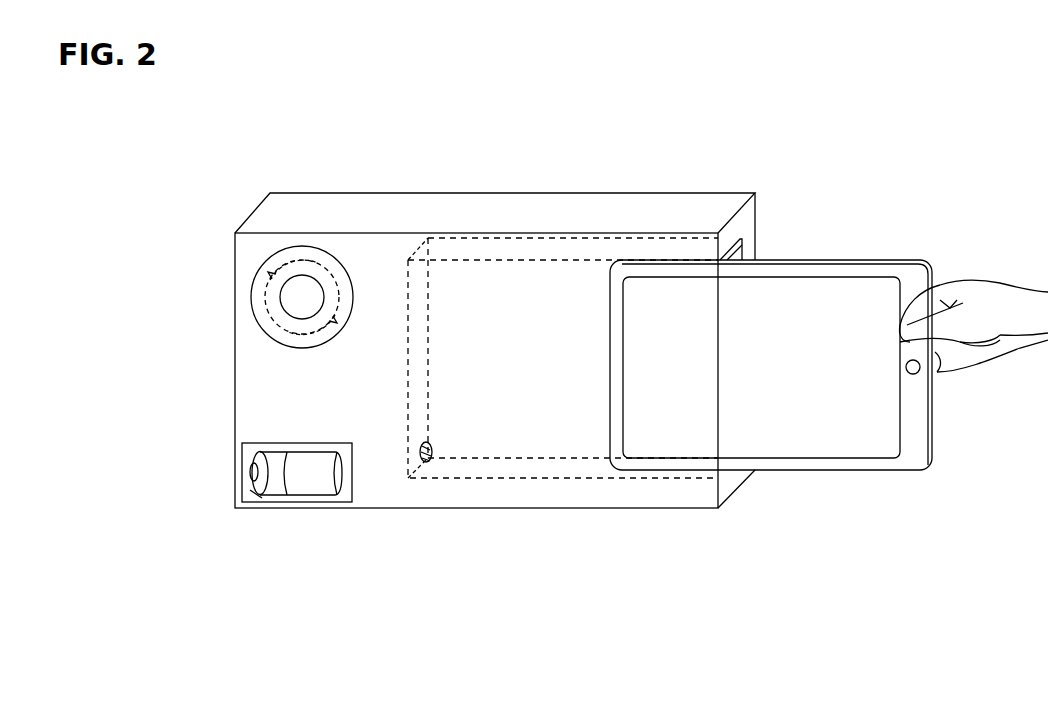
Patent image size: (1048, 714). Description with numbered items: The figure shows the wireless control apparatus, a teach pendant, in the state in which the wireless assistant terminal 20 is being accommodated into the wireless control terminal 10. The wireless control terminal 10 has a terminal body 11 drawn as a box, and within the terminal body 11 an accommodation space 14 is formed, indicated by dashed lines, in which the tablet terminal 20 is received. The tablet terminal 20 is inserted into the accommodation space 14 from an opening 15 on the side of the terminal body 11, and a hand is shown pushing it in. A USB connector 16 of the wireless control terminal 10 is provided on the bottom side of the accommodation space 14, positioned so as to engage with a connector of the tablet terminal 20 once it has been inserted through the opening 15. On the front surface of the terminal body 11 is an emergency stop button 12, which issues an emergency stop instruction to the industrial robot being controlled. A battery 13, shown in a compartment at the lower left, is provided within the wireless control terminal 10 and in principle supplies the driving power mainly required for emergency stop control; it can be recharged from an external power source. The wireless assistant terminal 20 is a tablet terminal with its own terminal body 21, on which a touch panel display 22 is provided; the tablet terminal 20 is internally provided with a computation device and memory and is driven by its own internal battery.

The wireless control terminal 10 is at (132, 283).
The terminal body 11 is at (265, 385).
The emergency stop button 12 is at (254, 300).
The battery 13 is at (248, 470).
The accommodation space 14 is at (528, 297).
The opening 15 is at (745, 250).
The USB connector 16 is at (428, 460).
The wireless assistant terminal 20 is at (788, 598).
The terminal body 21 is at (910, 457).
The touch panel display 22 is at (822, 445).